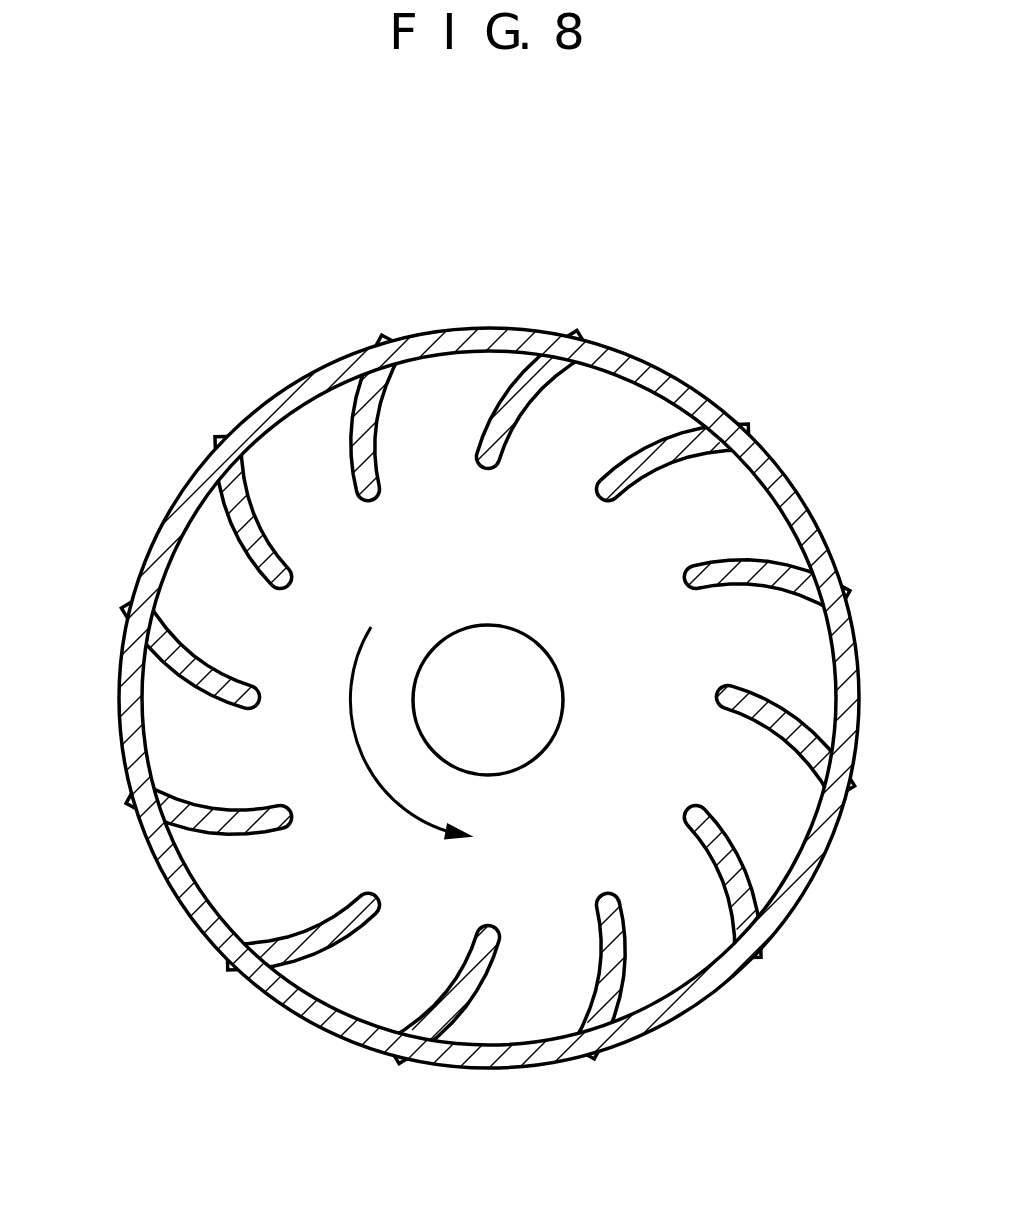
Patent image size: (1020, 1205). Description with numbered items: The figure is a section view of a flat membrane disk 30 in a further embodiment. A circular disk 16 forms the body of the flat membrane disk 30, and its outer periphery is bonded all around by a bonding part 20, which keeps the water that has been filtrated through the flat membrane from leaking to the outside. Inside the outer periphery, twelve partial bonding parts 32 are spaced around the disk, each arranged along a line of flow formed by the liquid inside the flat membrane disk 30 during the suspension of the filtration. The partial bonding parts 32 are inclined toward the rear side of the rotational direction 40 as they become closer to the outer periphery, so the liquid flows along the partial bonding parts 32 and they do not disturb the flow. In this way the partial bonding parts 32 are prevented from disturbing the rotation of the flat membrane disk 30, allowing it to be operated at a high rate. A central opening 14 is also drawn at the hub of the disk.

The shaft 14 is at (549, 748).
The circular disk 16 is at (688, 542).
The bonding part 20 is at (826, 547).
The flat membrane disk 30 is at (668, 273).
The partial bonding parts 32 is at (518, 378).
The rotational direction 40 is at (357, 737).